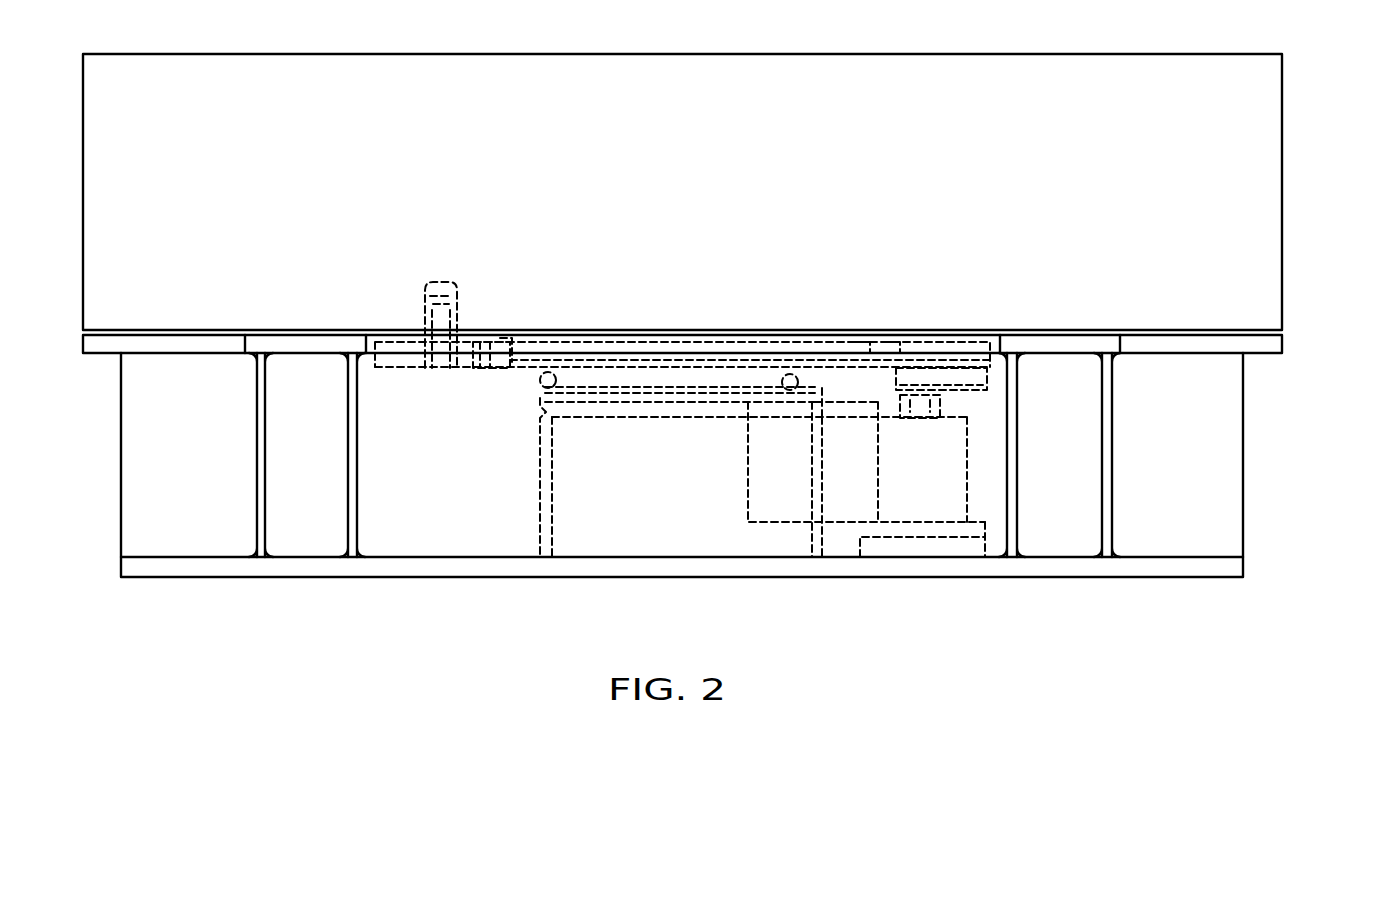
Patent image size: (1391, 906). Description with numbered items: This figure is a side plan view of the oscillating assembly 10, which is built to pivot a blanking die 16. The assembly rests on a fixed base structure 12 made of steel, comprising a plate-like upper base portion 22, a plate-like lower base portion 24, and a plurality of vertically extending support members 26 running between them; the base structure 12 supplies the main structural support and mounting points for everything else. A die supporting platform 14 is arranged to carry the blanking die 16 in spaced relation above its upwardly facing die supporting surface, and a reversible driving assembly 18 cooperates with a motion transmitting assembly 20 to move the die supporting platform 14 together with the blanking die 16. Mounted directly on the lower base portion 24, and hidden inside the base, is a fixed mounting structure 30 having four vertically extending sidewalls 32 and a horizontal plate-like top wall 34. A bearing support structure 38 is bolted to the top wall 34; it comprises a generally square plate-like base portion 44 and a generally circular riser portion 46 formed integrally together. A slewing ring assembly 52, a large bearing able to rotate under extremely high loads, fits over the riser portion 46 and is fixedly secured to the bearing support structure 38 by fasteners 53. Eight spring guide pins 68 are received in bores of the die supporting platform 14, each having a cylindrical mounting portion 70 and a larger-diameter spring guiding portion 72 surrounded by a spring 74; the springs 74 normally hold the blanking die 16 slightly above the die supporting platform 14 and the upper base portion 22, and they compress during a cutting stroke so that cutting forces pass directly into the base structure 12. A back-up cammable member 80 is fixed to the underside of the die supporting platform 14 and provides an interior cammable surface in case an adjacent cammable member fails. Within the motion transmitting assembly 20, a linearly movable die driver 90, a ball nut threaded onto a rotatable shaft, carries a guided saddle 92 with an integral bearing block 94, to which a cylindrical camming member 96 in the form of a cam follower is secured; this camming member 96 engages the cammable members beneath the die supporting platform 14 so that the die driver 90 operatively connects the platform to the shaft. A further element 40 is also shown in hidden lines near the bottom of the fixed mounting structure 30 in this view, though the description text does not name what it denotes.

The oscillating assembly 10 is at (1322, 300).
The fixed base structure 12 is at (1275, 434).
The die supporting platform 14 is at (425, 385).
The blanking die 16 is at (1258, 119).
The reversible driving assembly 18 is at (992, 500).
The motion transmitting assembly 20 is at (998, 408).
The upper base portion 22 is at (180, 347).
The lower base portion 24 is at (205, 567).
The vertically extending support members 26 is at (352, 480).
The fixed mounting structure 30 is at (590, 543).
The sidewalls 32 is at (810, 490).
The top wall 34 is at (707, 420).
The bearing support structure 38 is at (617, 423).
The base block 40 is at (940, 548).
The base portion 44 is at (647, 420).
The riser portion 46 is at (657, 387).
The slewing ring assembly 52 is at (838, 402).
The fasteners 53 is at (562, 368).
The spring guide pins 68 is at (478, 368).
The mounting portion 70 is at (485, 368).
The spring guiding portion 72 is at (490, 330).
The spring 74 is at (508, 330).
The back-up cammable member 80 is at (945, 395).
The linearly movable die driver 90 is at (990, 432).
The guided saddle 92 is at (948, 420).
The bearing block 94 is at (996, 396).
The camming member 96 is at (922, 366).